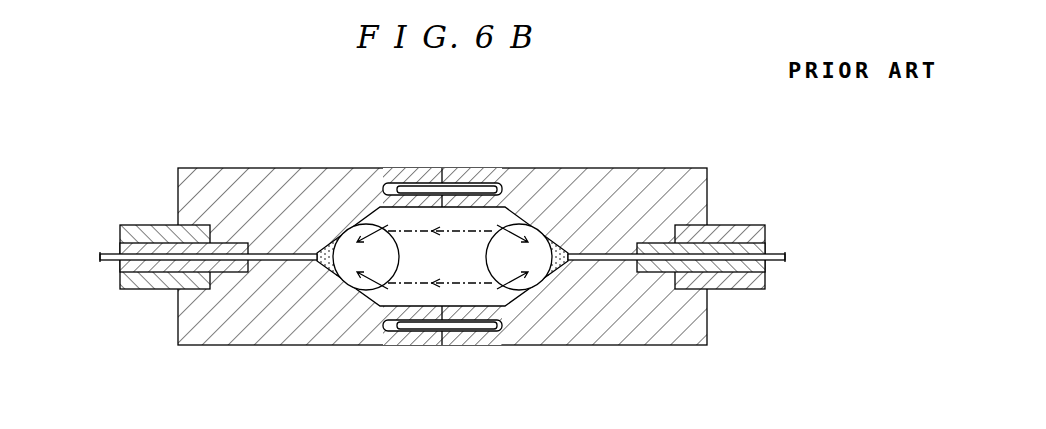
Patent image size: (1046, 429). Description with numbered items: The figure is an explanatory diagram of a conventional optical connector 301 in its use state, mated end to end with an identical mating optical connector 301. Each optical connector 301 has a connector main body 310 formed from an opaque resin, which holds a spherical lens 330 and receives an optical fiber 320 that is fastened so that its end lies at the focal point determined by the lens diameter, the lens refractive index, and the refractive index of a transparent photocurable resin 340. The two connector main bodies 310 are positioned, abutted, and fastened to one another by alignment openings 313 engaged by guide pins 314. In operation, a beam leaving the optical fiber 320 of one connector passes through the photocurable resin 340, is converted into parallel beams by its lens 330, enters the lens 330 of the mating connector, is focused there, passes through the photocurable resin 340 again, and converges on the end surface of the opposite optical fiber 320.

The optical connector 301 is at (441, 247).
The connector main body 310 is at (238, 175).
The alignment openings 313 is at (387, 182).
The guide pins 314 is at (433, 186).
The optical fiber 320 is at (102, 253).
The spherical lens 330 is at (363, 291).
The photocurable resin 340 is at (310, 273).